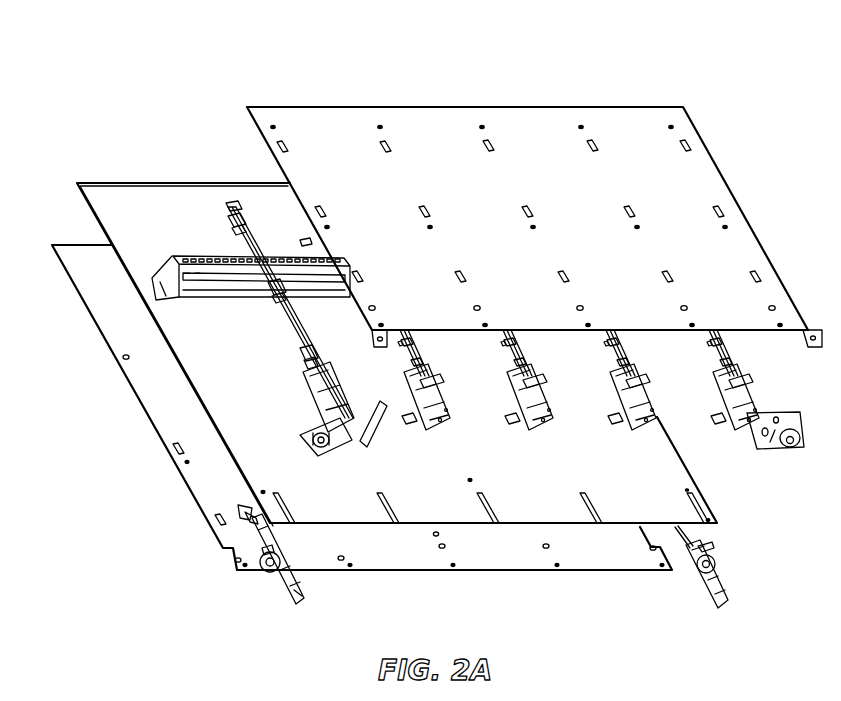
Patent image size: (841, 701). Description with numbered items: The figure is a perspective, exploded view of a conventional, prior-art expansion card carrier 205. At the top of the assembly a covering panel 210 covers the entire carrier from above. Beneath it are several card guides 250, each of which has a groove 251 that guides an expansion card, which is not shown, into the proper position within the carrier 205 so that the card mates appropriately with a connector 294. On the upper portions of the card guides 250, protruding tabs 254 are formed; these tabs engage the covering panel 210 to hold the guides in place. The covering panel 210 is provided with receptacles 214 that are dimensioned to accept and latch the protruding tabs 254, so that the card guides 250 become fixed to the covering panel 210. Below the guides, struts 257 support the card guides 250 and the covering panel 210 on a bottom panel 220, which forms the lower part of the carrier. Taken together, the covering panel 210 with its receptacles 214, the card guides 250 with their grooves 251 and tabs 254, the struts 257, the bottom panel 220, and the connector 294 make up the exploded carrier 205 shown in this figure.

The expansion card carrier 205 is at (668, 73).
The covering panel 210 is at (278, 106).
The receptacles 214 is at (290, 146).
The bottom panel 220 is at (186, 183).
The card guides 250 is at (292, 326).
The groove 251 is at (228, 210).
The protruding tabs 254 is at (228, 224).
The struts 257 is at (445, 424).
The connector 294 is at (165, 272).